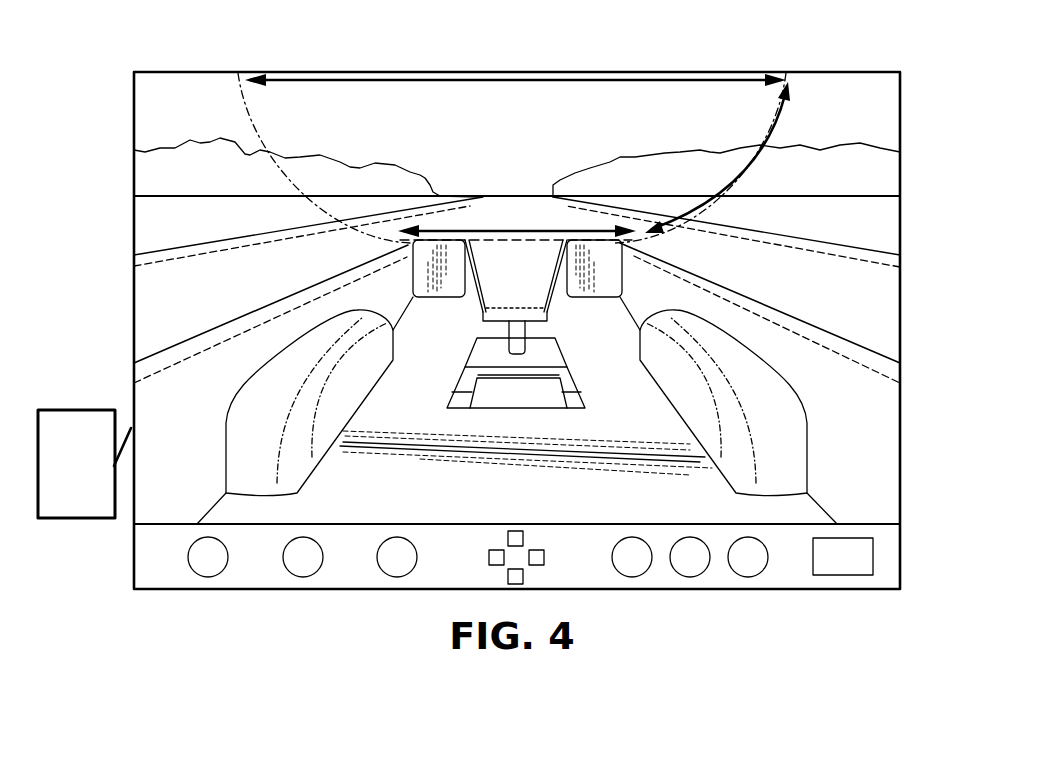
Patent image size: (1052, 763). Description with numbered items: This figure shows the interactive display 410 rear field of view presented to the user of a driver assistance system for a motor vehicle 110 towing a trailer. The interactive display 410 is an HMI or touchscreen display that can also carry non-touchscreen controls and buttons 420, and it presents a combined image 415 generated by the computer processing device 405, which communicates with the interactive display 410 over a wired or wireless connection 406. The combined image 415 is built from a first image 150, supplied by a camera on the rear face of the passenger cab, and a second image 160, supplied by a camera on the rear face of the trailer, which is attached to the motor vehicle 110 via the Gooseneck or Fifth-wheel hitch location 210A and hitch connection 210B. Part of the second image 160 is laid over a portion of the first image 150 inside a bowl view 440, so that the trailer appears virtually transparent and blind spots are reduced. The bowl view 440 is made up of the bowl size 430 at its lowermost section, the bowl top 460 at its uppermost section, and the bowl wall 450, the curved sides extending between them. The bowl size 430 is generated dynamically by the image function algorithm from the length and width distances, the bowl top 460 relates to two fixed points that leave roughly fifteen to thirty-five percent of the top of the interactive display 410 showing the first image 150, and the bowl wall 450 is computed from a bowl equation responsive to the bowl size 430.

The motor vehicle 110 is at (160, 326).
The first image 150 is at (190, 185).
The second image 160 is at (260, 103).
The Gooseneck or Fifth-wheel hitch location 210A is at (604, 380).
The hitch connection 210B is at (572, 310).
The computer processing device 405 is at (76, 464).
The connection 406 is at (122, 421).
The interactive display 410 is at (900, 182).
The combined image 415 is at (814, 107).
The non-touchscreen controls and buttons 420 is at (806, 618).
The bowl size 430 is at (497, 226).
The bowl view 440 is at (300, 206).
The bowl wall 450 is at (733, 178).
The bowl top 460 is at (565, 78).